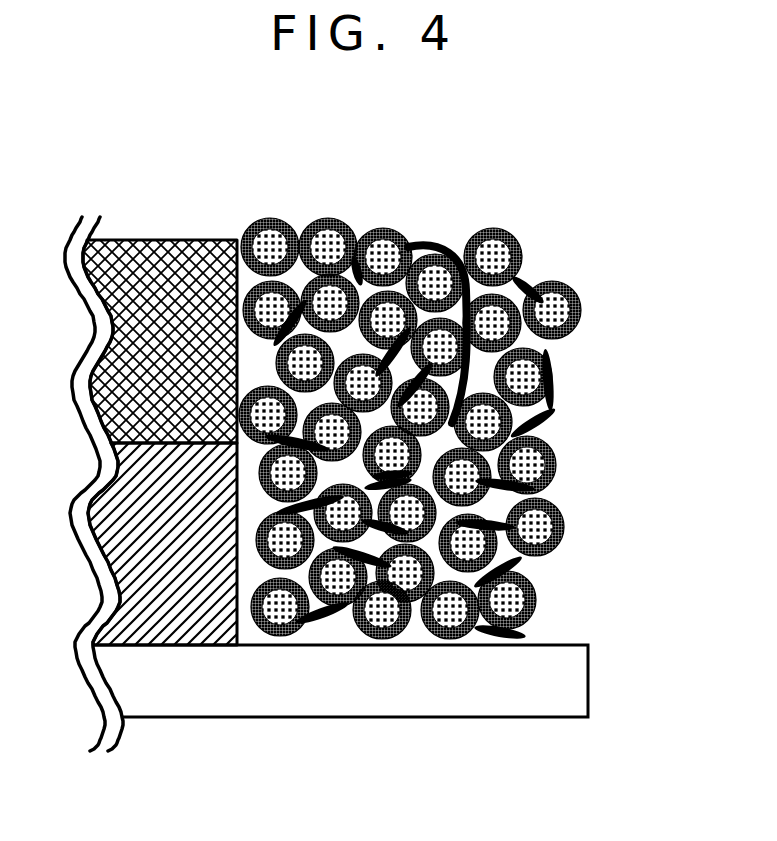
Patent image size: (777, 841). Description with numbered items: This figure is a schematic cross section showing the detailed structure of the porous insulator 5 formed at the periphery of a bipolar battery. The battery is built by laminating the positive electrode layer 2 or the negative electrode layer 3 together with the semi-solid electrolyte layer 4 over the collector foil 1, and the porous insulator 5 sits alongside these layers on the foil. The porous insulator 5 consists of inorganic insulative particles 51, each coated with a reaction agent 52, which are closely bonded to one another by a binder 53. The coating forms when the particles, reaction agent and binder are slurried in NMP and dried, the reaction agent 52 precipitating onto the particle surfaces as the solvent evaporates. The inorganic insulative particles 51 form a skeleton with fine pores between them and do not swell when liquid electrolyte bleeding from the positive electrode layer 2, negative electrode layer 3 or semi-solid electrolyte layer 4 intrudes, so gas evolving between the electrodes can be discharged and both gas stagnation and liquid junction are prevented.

The collector foil 1 is at (366, 690).
The positive electrode layer 2 is at (162, 616).
The negative electrode layer 3 is at (172, 647).
The semi-solid electrolyte layer 4 is at (170, 262).
The porous insulator 5 is at (453, 381).
The inorganic insulative particles 51 is at (533, 463).
The reaction agent 52 is at (548, 447).
The binder 53 is at (603, 378).